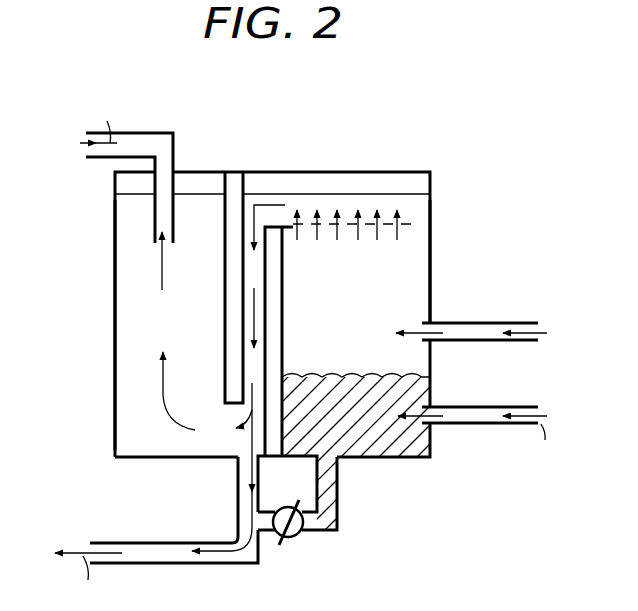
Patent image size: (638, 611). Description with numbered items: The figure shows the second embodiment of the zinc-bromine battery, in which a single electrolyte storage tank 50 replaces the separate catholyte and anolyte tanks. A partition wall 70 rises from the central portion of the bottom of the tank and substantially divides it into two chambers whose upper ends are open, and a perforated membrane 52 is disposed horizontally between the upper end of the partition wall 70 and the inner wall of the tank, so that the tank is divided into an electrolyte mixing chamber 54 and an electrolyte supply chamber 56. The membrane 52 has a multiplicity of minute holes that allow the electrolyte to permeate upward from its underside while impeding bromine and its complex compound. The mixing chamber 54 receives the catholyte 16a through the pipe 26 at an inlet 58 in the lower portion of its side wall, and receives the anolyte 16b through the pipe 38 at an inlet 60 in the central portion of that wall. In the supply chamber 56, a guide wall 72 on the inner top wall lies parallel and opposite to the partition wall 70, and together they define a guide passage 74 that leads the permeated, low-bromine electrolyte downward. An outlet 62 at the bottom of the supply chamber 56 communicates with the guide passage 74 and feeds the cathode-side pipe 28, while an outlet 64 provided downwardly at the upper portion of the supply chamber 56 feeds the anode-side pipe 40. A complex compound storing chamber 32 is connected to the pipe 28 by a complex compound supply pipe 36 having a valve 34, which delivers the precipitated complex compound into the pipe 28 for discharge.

The catholyte 16a is at (311, 515).
The anolyte 16b is at (316, 218).
The pipe 26 is at (505, 407).
The pipe 28 is at (152, 543).
The complex compound storing chamber 32 is at (393, 457).
The valve 34 is at (297, 542).
The complex compound supply pipe 36 is at (338, 515).
The pipe 38 is at (505, 323).
The pipe 40 is at (155, 133).
The electrolyte storage tank 50 is at (213, 173).
The perforated membrane 52 is at (420, 223).
The electrolyte mixing chamber 54 is at (420, 278).
The electrolyte supply chamber 56 is at (130, 318).
The inlet 58 is at (433, 408).
The inlet 60 is at (432, 326).
The outlet 62 is at (240, 457).
The outlet 64 is at (168, 237).
The partition wall 70 is at (282, 331).
The guide wall 72 is at (225, 290).
The guide passage 74 is at (253, 357).